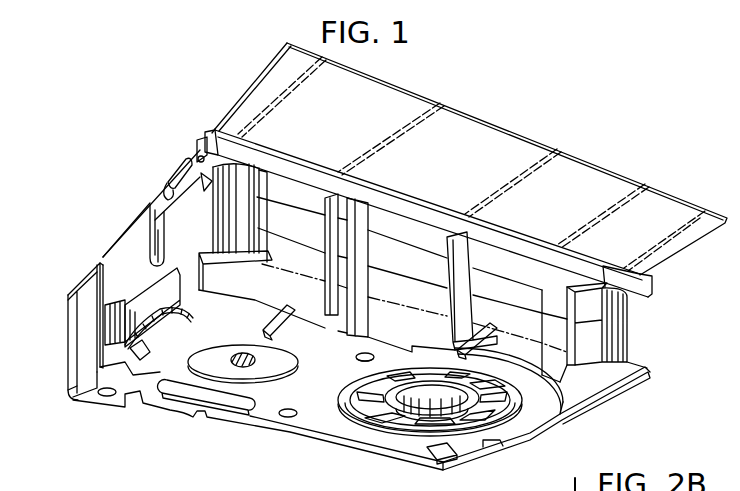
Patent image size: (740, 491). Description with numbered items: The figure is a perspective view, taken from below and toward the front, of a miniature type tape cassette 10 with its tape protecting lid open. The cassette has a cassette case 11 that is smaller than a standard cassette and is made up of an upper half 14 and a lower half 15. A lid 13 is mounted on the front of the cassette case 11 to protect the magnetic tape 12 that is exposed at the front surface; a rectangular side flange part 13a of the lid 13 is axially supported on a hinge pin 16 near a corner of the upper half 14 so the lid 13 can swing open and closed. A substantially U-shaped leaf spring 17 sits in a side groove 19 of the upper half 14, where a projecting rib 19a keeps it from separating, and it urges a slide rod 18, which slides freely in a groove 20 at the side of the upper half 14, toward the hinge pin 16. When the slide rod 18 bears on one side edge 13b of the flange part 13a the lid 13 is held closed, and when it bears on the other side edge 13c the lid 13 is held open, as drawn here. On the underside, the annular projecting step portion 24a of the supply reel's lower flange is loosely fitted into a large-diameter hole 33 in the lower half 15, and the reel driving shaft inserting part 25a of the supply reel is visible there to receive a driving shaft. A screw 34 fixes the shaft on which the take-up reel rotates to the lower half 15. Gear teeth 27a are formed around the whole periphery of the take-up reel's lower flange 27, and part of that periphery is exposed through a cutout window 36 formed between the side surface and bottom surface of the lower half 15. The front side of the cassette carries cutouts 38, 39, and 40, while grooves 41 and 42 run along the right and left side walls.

The miniature type tape cassette 10 is at (433, 76).
The cassette case 11 is at (110, 234).
The magnetic tape 12 is at (433, 230).
The lid 13 is at (549, 137).
The side flange part 13a is at (211, 133).
The one side edge 13b is at (202, 191).
The another side edge 13c is at (197, 153).
The upper half 14 is at (78, 290).
The lower half 15 is at (72, 363).
The hinge pin 16 is at (200, 156).
The leaf spring 17 is at (147, 233).
The slide rod 18 is at (181, 172).
The side groove 19 is at (153, 205).
The projecting rib 19a is at (157, 252).
The groove 20 is at (167, 196).
The annular projecting step portion 24a is at (357, 415).
The reel driving shaft inserting part 25a is at (505, 436).
The lower flange 27 is at (172, 327).
The gear teeth 27a is at (147, 330).
The hole 33 is at (344, 392).
The screw 34 is at (248, 372).
The cutout window 36 is at (143, 328).
The cutout 38 is at (523, 352).
The cutout 39 is at (358, 334).
The cutout 40 is at (305, 292).
The groove 41 is at (100, 277).
The groove 42 is at (503, 447).